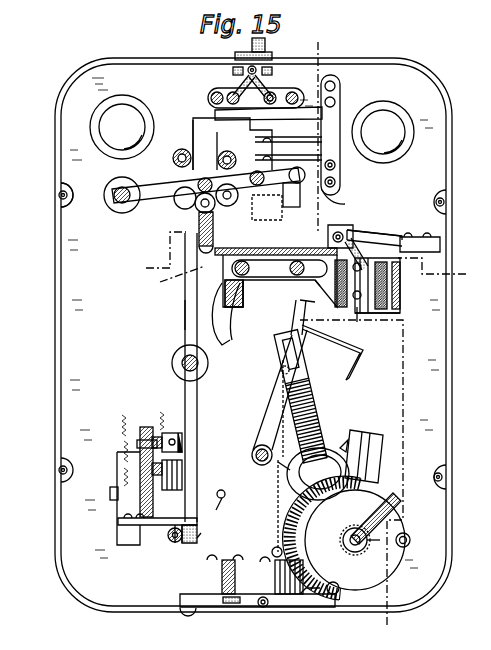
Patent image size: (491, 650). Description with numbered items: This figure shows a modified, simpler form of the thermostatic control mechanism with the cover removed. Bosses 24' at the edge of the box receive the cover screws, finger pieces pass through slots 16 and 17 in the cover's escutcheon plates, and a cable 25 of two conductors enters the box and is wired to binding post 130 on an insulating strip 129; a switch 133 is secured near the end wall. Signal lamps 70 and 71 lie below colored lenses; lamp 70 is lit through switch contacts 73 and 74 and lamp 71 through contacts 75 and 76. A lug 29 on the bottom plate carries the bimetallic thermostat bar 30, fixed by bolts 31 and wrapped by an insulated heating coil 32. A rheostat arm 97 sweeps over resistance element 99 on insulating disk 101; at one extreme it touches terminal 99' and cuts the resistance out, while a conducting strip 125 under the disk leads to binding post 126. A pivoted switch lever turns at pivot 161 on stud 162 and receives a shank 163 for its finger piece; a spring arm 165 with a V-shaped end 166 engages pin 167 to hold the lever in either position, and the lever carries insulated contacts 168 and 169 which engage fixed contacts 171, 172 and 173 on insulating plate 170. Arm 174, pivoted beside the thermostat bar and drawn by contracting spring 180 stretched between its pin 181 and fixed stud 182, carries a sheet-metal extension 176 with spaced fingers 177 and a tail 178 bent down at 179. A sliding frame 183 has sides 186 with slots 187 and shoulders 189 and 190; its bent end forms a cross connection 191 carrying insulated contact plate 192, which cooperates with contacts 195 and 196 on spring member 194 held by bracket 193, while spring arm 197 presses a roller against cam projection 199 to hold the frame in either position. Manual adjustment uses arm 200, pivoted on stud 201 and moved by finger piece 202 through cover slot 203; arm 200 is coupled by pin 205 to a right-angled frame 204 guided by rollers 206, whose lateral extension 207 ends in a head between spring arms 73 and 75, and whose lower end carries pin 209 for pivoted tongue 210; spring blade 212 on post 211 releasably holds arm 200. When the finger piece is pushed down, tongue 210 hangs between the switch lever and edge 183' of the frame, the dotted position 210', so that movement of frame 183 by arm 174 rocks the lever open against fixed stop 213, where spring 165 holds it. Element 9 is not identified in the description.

The pin 9 is at (221, 498).
The slot 16 is at (327, 45).
The slot 17 is at (144, 261).
The bosses 24' is at (41, 197).
The cable 25 is at (250, 42).
The lug 29 is at (367, 460).
The thermostat bar 30 is at (297, 486).
The bolts 31 is at (342, 446).
The insulated coil 32 is at (318, 404).
The signal lamp 70 is at (124, 118).
The signal lamp 71 is at (385, 122).
The switch contact 73 is at (337, 165).
The switch contact 74 is at (338, 181).
The switch contact 75 is at (328, 115).
The switch contact 76 is at (322, 118).
The rheostat arm 97 is at (378, 512).
The resistance element 99 is at (361, 538).
The terminal 99' is at (333, 578).
The insulating plate 101 is at (366, 594).
The conducting strip 125 is at (376, 549).
The binding post 126 is at (411, 540).
The insulating strip 129 is at (274, 92).
The binding post 130 is at (230, 92).
The switch 133 is at (248, 596).
The pivot 161 is at (180, 363).
The stud 162 is at (178, 547).
The shank 163 is at (174, 547).
The spring arm 165 is at (157, 526).
The V-shaped end 166 is at (206, 539).
The pin 167 is at (177, 543).
The insulated contact 168 is at (194, 452).
The insulated contact 169 is at (174, 470).
The insulating plate 170 is at (147, 428).
The fixed contact 171 is at (137, 438).
The fixed contact 172 is at (132, 487).
The fixed contact 173 is at (110, 495).
The arm 174 is at (282, 384).
The extension 176 is at (300, 338).
The spaced fingers 177 is at (295, 320).
The tail 178 is at (365, 342).
The downward bend 179 is at (352, 376).
The contracting coil spring 180 is at (278, 476).
The pin 181 is at (282, 366).
The fixed stud 182 is at (275, 548).
The U-shaped frame 183 is at (276, 243).
The edge 183' is at (159, 319).
The sides 186 is at (233, 328).
The slots 187 is at (275, 258).
The shoulder 189 is at (302, 303).
The shoulder 190 is at (238, 309).
The cross connection 191 is at (330, 230).
The insulated contact plate 192 is at (318, 283).
The bracket 193 is at (389, 286).
The spring member 194 is at (378, 314).
The insulated contact 195 is at (382, 262).
The insulated contact 196 is at (358, 320).
The spring arm 197 is at (395, 228).
The cam projection 199 is at (370, 238).
The arm 200 is at (170, 190).
The stud 201 is at (115, 207).
The finger piece 202 is at (245, 150).
The slot 203 is at (262, 140).
The right-angled frame 204 is at (191, 131).
The pin 205 is at (178, 161).
The rollers 206 is at (183, 149).
The lateral extension 207 is at (212, 123).
The pin 209 is at (176, 208).
The tongue 210 is at (170, 221).
The tongue (dotted coupling position) 210' is at (170, 278).
The post 211 is at (302, 200).
The spring blade 212 is at (340, 196).
The fixed stop 213 is at (230, 513).